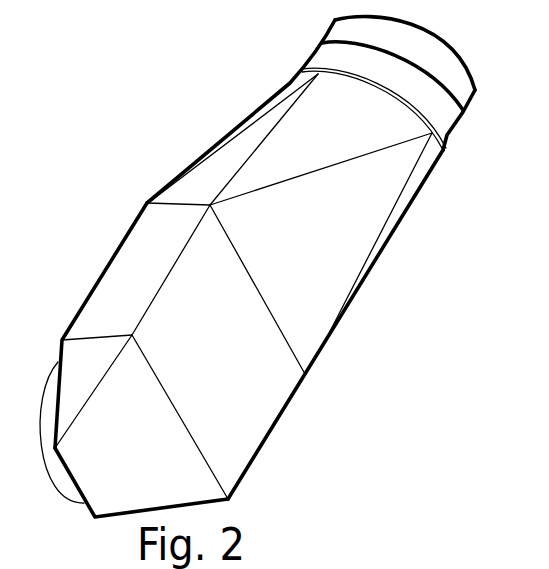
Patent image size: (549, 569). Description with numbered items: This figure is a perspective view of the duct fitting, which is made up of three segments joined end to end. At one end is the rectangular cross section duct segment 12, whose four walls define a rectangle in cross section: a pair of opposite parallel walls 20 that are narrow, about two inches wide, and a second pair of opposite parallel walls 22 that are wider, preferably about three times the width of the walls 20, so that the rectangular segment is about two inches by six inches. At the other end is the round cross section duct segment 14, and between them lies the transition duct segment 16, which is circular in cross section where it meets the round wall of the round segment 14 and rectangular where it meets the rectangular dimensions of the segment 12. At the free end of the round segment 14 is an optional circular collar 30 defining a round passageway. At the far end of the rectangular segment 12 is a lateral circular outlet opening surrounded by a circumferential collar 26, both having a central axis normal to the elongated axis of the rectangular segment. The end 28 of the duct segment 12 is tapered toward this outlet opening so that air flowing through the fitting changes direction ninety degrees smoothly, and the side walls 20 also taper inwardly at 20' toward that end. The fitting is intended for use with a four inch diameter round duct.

The rectangular cross section duct segment 12 is at (276, 379).
The round cross section duct segment 14 is at (446, 135).
The transition duct segment 16 is at (346, 249).
The walls 20 is at (132, 325).
The inward taper of side walls 20' is at (97, 351).
The walls 22 is at (247, 440).
The circumferential collar 26 is at (59, 488).
The end of duct segment 28 is at (148, 495).
The circular collar 30 is at (462, 96).